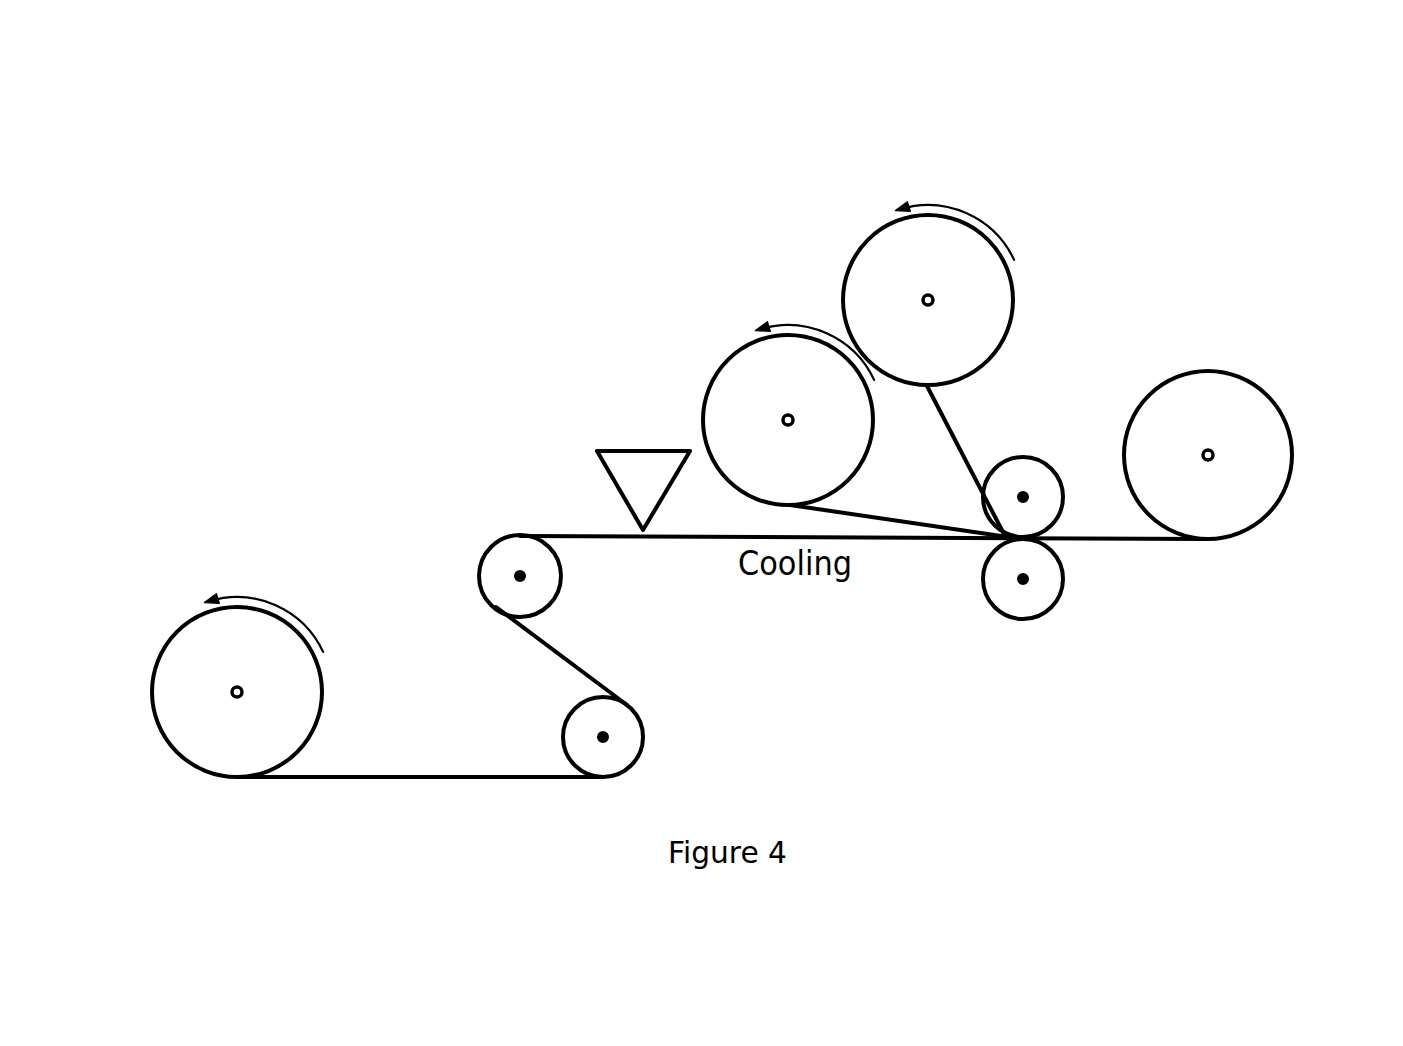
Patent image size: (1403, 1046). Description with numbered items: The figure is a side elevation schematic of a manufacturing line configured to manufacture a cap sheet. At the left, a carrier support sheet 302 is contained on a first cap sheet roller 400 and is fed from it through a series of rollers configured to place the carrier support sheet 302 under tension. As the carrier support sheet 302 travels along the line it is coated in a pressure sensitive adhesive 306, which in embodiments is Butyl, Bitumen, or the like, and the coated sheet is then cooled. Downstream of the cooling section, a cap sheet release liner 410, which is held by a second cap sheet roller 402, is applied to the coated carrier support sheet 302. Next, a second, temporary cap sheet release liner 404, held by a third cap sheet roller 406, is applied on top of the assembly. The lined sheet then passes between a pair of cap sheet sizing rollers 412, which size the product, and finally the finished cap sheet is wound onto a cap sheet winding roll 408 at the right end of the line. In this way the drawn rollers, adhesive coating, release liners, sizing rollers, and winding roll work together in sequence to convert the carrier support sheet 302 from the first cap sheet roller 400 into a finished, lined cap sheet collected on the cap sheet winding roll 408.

The carrier support sheet 302 is at (233, 573).
The pressure sensitive adhesive 306 is at (643, 438).
The first cap sheet roller 400 is at (213, 775).
The second cap sheet roller 402 is at (750, 343).
The temporary cap sheet release liner 404 is at (940, 195).
The third cap sheet roller 406 is at (1017, 307).
The cap sheet winding roll 408 is at (1205, 363).
The cap sheet release liner 410 is at (765, 317).
The cap sheet sizing rollers 412 is at (1027, 625).